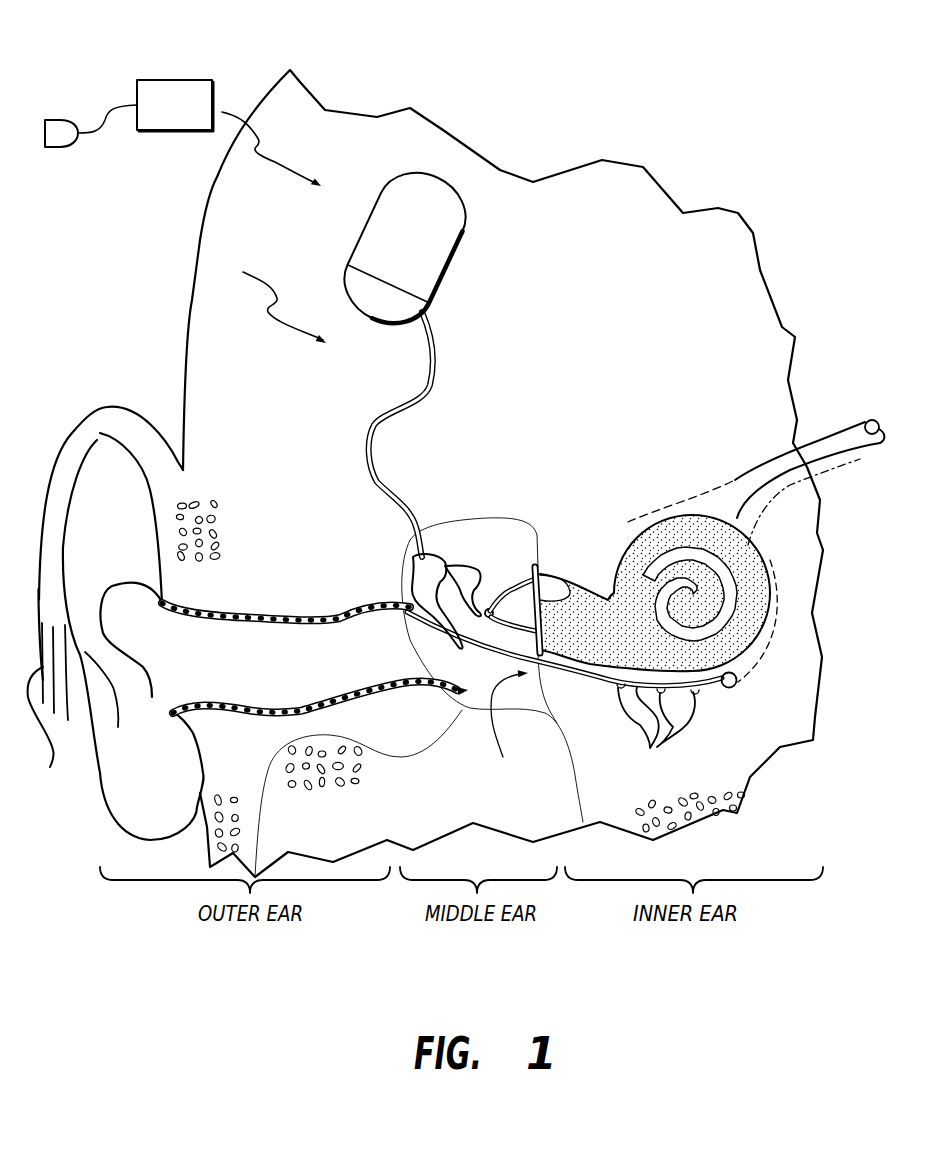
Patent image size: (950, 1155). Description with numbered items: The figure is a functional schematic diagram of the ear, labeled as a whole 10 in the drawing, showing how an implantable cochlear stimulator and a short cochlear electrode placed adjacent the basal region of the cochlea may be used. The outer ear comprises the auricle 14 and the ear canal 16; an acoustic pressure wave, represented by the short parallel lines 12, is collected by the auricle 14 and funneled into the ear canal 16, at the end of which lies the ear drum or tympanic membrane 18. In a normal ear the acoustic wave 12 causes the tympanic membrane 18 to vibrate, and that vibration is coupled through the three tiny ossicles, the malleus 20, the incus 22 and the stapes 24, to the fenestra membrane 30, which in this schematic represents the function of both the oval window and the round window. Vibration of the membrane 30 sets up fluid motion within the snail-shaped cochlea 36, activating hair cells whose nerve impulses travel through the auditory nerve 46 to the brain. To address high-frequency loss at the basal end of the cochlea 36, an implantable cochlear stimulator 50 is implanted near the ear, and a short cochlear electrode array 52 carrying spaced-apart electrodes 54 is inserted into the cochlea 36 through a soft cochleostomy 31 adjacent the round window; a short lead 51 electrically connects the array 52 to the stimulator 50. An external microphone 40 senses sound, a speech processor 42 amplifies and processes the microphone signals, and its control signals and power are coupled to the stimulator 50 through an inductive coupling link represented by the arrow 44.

The hearing system / ear 10 is at (271, 301).
The acoustic pressure wave 12 is at (48, 726).
The auricle 14 is at (120, 810).
The ear canal 16 is at (296, 673).
The tympanic membrane 18 is at (417, 643).
The malleus 20 is at (410, 583).
The incus 22 is at (455, 570).
The stapes 24 is at (490, 606).
The fenestra membrane 30 is at (566, 597).
The soft cochleostomy 31 is at (509, 729).
The cochlea 36 is at (767, 647).
The external microphone 40 is at (53, 120).
The speech processor 42 is at (162, 80).
The inductive coupling link 44 is at (226, 112).
The auditory nerve 46 is at (857, 420).
The implantable cochlear stimulator 50 is at (430, 268).
The lead 51 is at (437, 355).
The short cochlear electrode array 52 is at (583, 668).
The electrodes 54 is at (733, 683).